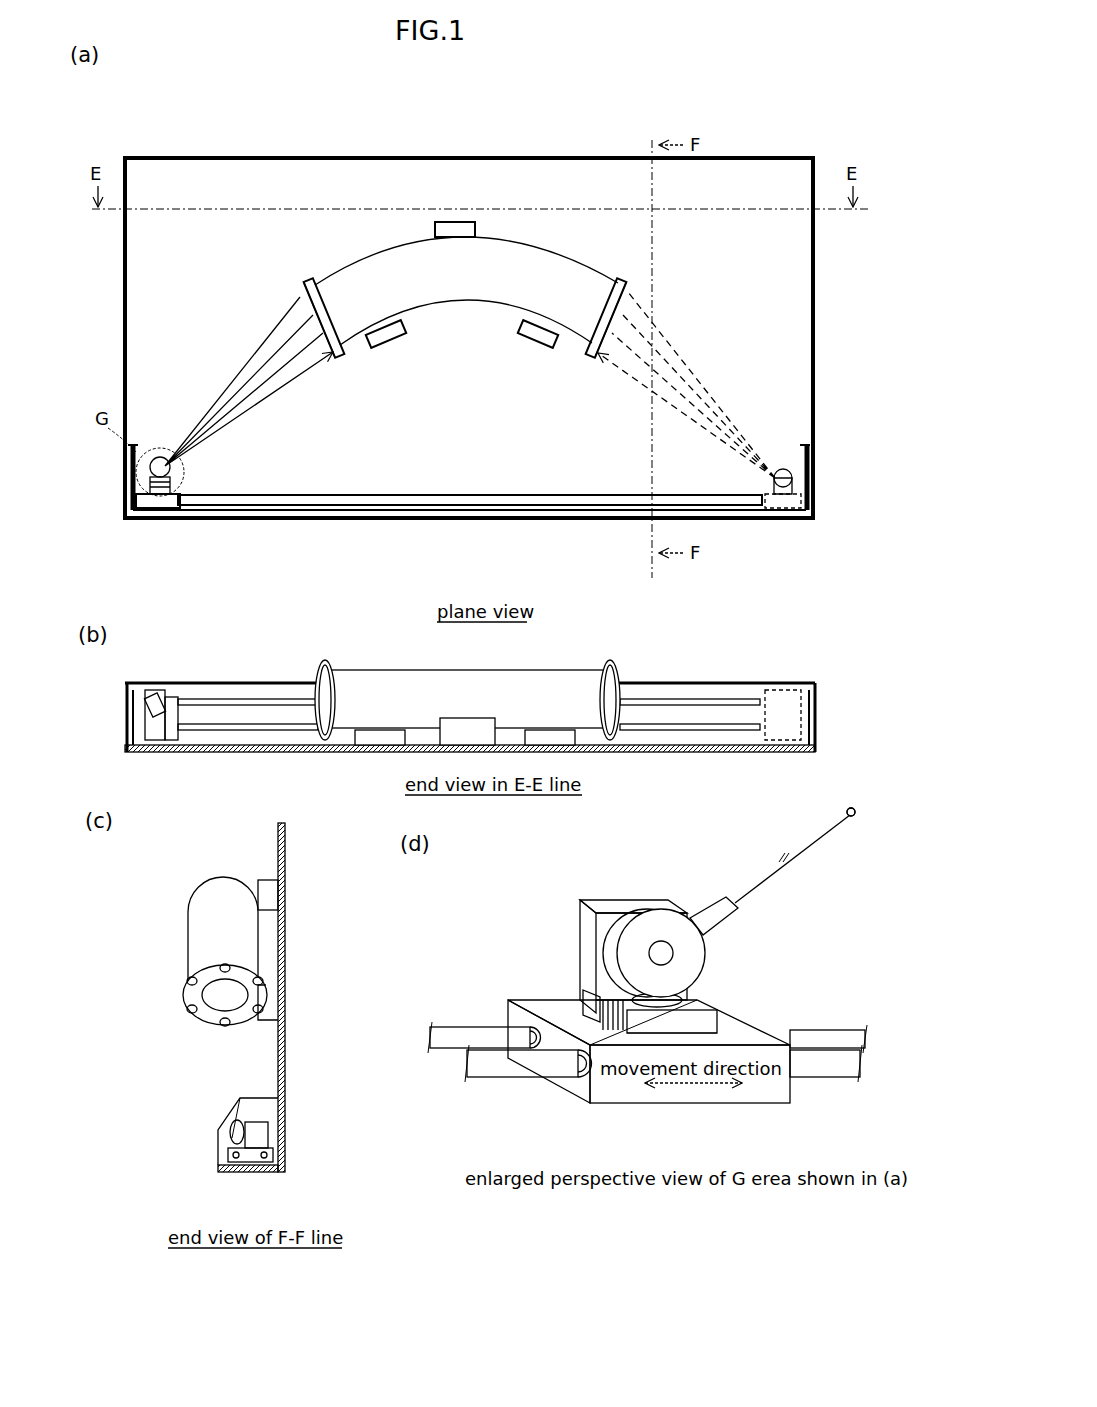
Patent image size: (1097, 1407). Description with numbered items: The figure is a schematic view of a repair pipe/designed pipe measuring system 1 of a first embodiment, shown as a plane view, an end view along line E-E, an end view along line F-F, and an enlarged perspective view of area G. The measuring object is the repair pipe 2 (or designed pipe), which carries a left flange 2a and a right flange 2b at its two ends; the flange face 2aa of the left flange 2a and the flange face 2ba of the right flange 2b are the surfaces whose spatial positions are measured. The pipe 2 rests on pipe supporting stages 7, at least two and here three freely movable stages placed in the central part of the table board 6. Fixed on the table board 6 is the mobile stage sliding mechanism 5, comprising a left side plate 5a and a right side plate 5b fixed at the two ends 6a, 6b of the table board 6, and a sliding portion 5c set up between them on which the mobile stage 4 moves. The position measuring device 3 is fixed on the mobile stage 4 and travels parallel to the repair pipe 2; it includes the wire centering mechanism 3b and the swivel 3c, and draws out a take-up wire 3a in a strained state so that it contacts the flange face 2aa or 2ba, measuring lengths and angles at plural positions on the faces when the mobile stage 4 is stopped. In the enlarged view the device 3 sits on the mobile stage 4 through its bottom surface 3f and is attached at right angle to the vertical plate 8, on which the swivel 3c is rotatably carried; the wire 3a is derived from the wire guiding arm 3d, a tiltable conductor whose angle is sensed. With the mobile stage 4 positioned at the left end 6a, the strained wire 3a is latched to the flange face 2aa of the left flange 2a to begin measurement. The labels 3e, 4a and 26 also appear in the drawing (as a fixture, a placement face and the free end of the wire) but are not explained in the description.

The repair pipe/designed pipe measuring system 1 is at (433, 152).
The repair pipe 2 is at (498, 228).
The left flange 2a is at (293, 283).
The flange face 2aa is at (302, 292).
The right flange 2b is at (632, 277).
The flange face 2ba is at (628, 288).
The position measuring device 3 is at (176, 490).
The take-up wire 3a is at (275, 373).
The wire centering mechanism 3b is at (632, 938).
The swivel 3c is at (662, 1000).
The wire guiding arm 3d is at (712, 905).
The fixture 3e is at (585, 1000).
The bottom surface 3f is at (685, 1035).
The mobile stage 4 is at (161, 507).
The placement face 4a is at (722, 1017).
The mobile stage sliding mechanism 5 is at (155, 515).
The left side plate 5a is at (131, 490).
The right side plate 5b is at (813, 483).
The sliding portion 5c is at (213, 497).
The table board 6 is at (681, 479).
The left end 6a is at (128, 447).
The right end 6b is at (806, 447).
The pipe supporting stage 7 is at (535, 338).
The vertical plate 8 is at (588, 950).
The wire end 26 is at (852, 822).